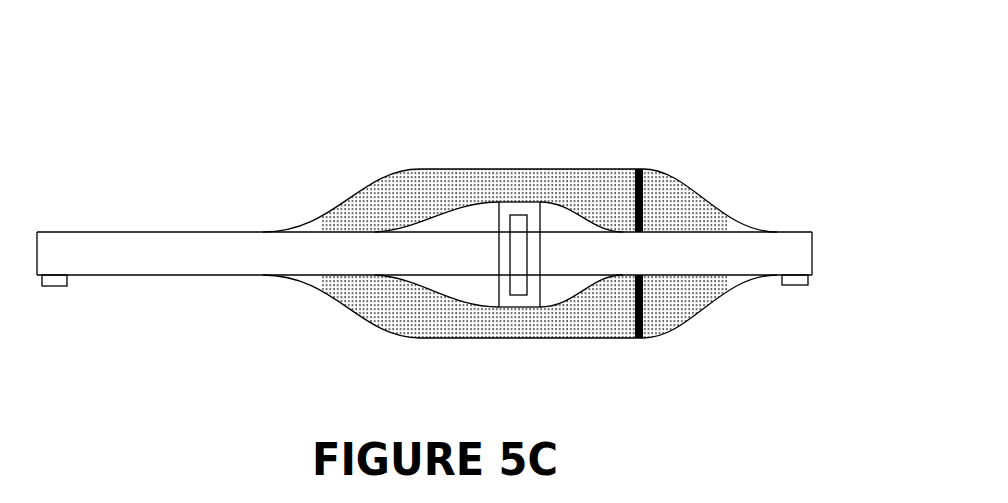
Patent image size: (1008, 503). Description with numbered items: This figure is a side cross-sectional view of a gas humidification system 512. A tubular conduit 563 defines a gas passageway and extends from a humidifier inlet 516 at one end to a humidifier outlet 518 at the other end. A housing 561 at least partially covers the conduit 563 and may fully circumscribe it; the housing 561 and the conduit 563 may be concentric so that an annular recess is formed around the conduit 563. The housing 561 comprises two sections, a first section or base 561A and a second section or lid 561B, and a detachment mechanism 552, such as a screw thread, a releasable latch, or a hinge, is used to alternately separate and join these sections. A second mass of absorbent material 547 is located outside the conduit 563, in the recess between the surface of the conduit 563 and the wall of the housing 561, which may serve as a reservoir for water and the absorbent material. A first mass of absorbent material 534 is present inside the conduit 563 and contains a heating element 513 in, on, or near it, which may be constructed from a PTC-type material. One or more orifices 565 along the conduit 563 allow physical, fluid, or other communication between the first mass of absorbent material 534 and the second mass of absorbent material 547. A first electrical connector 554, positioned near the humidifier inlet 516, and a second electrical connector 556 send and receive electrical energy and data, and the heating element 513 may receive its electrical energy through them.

The gas humidification system 512 is at (317, 320).
The heating element 513 is at (520, 225).
The humidifier inlet 516 is at (72, 280).
The humidifier outlet 518 is at (812, 276).
The first mass of absorbent material 534 is at (533, 210).
The second mass of absorbent material 547 is at (458, 185).
The detachment mechanism 552 is at (641, 172).
The first electrical connector 554 is at (55, 286).
The second electrical connector 556 is at (796, 286).
The housing 561 is at (658, 95).
The base 561A is at (613, 170).
The lid 561B is at (697, 195).
The conduit 563 is at (373, 250).
The orifices 565 is at (515, 200).